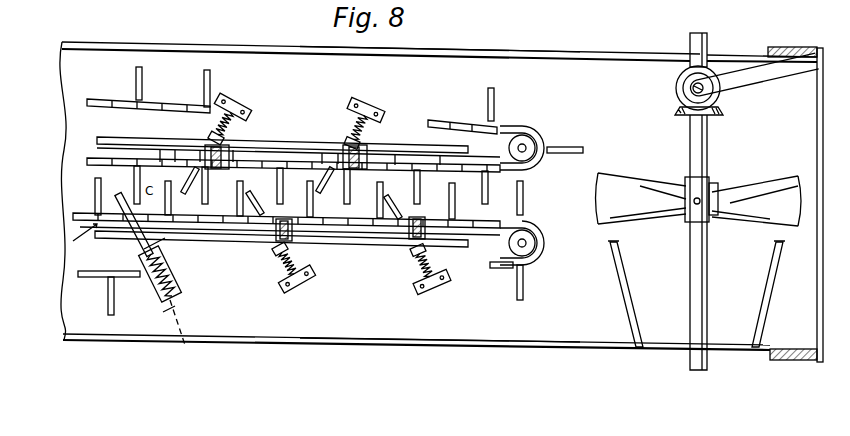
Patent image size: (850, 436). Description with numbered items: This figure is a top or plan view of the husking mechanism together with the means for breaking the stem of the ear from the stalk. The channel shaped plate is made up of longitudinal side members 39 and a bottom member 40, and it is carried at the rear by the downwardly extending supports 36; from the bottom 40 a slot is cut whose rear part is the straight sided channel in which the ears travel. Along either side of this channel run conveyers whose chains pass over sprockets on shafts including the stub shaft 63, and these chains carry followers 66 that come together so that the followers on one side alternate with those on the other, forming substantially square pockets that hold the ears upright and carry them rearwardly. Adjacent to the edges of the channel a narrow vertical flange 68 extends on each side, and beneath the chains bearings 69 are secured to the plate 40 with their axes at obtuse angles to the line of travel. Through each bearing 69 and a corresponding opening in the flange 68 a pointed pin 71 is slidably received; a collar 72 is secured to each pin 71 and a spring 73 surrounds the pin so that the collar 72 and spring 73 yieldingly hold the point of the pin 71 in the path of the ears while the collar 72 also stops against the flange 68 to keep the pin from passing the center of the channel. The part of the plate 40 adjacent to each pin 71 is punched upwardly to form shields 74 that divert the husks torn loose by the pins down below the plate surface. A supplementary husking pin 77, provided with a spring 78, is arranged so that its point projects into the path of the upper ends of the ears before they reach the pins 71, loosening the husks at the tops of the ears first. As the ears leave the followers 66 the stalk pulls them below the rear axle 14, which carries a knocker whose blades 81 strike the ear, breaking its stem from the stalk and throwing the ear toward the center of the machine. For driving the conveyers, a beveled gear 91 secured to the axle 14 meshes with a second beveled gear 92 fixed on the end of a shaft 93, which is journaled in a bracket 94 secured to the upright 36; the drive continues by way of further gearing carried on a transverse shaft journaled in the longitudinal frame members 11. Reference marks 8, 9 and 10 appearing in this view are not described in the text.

The slide block 8 is at (687, 179).
The section line 9 is at (163, 358).
The section line 10 is at (332, 193).
The longitudinal frame members 11 is at (239, 183).
The rear axle 14 is at (704, 269).
The downwardly extending supports 36 is at (795, 51).
The longitudinal side members 39 is at (490, 58).
The bottom member 40 is at (423, 157).
The stub shaft 63 is at (524, 148).
The followers 66 is at (142, 81).
The vertical flange 68 is at (122, 142).
The bearings 69 is at (236, 104).
The pointed pin 71 is at (334, 189).
The collar 72 is at (209, 137).
The spring 73 is at (364, 130).
The shields 74 is at (214, 158).
The pin 77 is at (126, 202).
The spring 78 is at (176, 270).
The blades 81 is at (757, 165).
The beveled gear 91 is at (721, 114).
The second beveled gear 92 is at (678, 90).
The shaft 93 is at (696, 95).
The bracket 94 is at (742, 81).